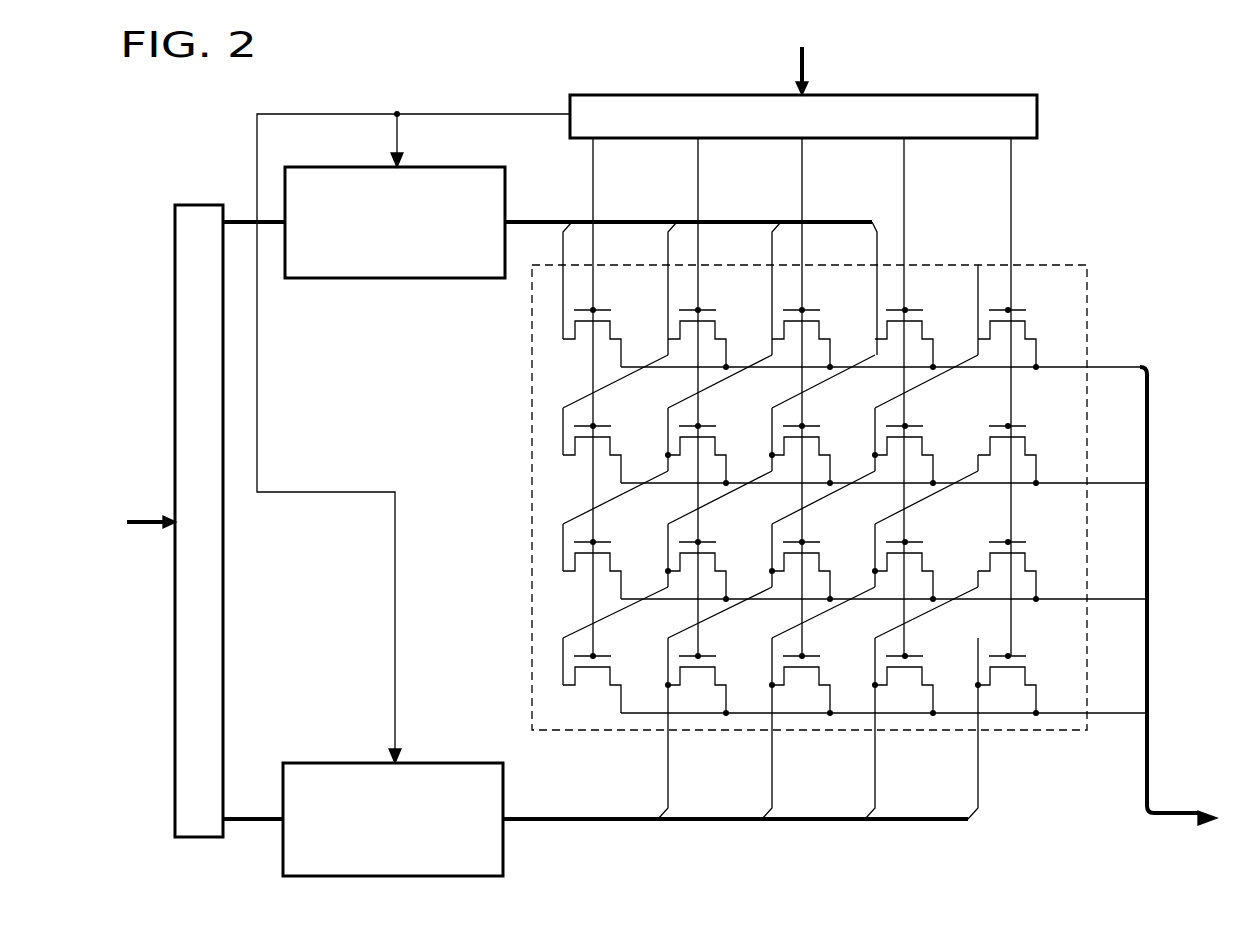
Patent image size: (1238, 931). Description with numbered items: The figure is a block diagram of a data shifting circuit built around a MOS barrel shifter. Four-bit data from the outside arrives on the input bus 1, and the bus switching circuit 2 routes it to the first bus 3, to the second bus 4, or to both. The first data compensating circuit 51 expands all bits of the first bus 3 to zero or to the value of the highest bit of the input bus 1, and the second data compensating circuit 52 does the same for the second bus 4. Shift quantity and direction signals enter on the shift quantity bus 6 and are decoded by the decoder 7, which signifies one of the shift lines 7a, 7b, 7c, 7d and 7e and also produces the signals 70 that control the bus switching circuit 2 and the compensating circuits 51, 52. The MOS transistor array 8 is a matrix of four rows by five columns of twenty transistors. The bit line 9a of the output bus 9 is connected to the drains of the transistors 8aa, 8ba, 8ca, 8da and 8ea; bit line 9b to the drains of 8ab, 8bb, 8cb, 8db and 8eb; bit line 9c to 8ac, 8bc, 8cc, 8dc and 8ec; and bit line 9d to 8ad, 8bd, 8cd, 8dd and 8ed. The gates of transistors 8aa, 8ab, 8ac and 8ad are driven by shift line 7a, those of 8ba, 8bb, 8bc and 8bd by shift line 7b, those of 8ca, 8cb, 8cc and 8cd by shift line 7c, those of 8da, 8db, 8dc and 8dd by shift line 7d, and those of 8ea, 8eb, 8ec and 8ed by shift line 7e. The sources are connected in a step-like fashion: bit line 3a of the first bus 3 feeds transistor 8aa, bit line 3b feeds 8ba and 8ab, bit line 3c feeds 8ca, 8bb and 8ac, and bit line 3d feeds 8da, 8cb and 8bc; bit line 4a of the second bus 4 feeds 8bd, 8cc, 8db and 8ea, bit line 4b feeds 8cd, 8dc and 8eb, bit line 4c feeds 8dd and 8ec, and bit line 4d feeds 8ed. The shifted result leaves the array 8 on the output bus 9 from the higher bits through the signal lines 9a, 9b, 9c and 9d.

The input bus 1 is at (150, 522).
The bus switching circuit 2 is at (203, 163).
The first bus 3 is at (582, 817).
The bit line 3a is at (1021, 728).
The bit line 3b is at (919, 728).
The bit line 3c is at (815, 728).
The bit line 3d is at (712, 728).
The second bus 4 is at (533, 220).
The bit line 4a is at (921, 288).
The bit line 4b is at (820, 289).
The bit line 4c is at (715, 289).
The bit line 4d is at (611, 281).
The shift quantity bus 6 is at (808, 68).
The decoder 7 is at (569, 98).
The shift line 7a is at (1059, 397).
The shift line 7b is at (953, 397).
The shift line 7c is at (850, 397).
The shift line 7d is at (747, 397).
The shift line 7e is at (641, 397).
The MOS transistor array 8 is at (1073, 265).
The MOS transistor 8aa is at (1026, 672).
The MOS transistor 8ab is at (1026, 558).
The MOS transistor 8ac is at (1026, 442).
The MOS transistor 8ad is at (1026, 326).
The MOS transistor 8ba is at (923, 672).
The MOS transistor 8bb is at (923, 558).
The MOS transistor 8bc is at (923, 442).
The MOS transistor 8bd is at (923, 326).
The MOS transistor 8ca is at (820, 672).
The MOS transistor 8cb is at (820, 558).
The MOS transistor 8cc is at (820, 442).
The MOS transistor 8cd is at (820, 326).
The MOS transistor 8da is at (716, 672).
The MOS transistor 8db is at (716, 558).
The MOS transistor 8dc is at (716, 442).
The MOS transistor 8dd is at (716, 326).
The MOS transistor 8ea is at (611, 672).
The MOS transistor 8eb is at (611, 558).
The MOS transistor 8ec is at (611, 442).
The MOS transistor 8ed is at (611, 326).
The output bus 9 is at (1183, 812).
The bit line 9a is at (884, 675).
The bit line 9b is at (884, 561).
The bit line 9c is at (884, 445).
The bit line 9d is at (882, 329).
The first data compensating circuit 51 is at (446, 762).
The second data compensating circuit 52 is at (450, 279).
The signals 70 is at (351, 112).